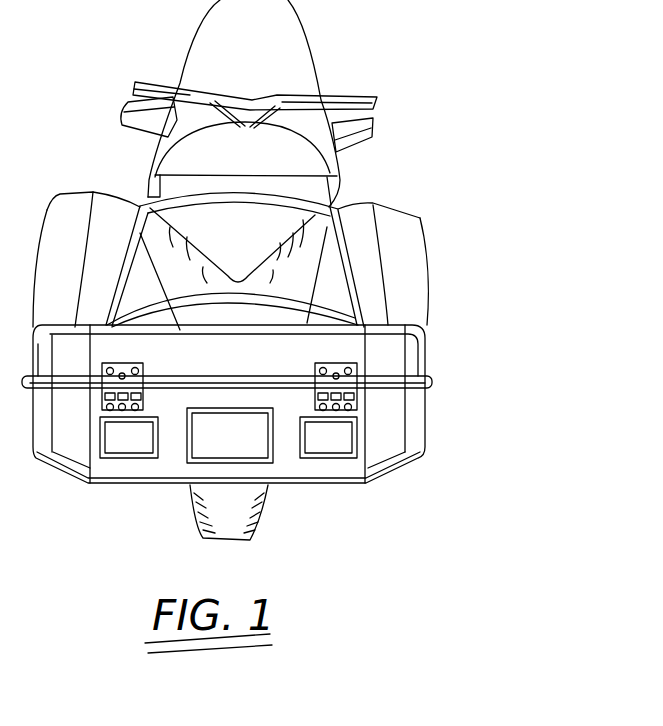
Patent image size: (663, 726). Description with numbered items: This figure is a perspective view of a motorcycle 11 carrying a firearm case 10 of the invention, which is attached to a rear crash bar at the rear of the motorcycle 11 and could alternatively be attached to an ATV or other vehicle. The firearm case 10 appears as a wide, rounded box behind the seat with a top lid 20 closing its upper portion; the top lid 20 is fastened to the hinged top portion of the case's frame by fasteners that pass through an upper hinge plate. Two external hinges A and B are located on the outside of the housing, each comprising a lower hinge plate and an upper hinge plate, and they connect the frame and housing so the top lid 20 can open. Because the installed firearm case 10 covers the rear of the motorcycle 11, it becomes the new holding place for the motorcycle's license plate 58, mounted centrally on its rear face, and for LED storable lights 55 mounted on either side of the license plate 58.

The firearm case 10 is at (402, 437).
The top lid 20 is at (412, 362).
The motorcycle 11 is at (342, 249).
The LED storable lights 55 is at (148, 447).
The license plate 58 is at (208, 443).
The external hinge A is at (110, 392).
The external hinge B is at (353, 388).